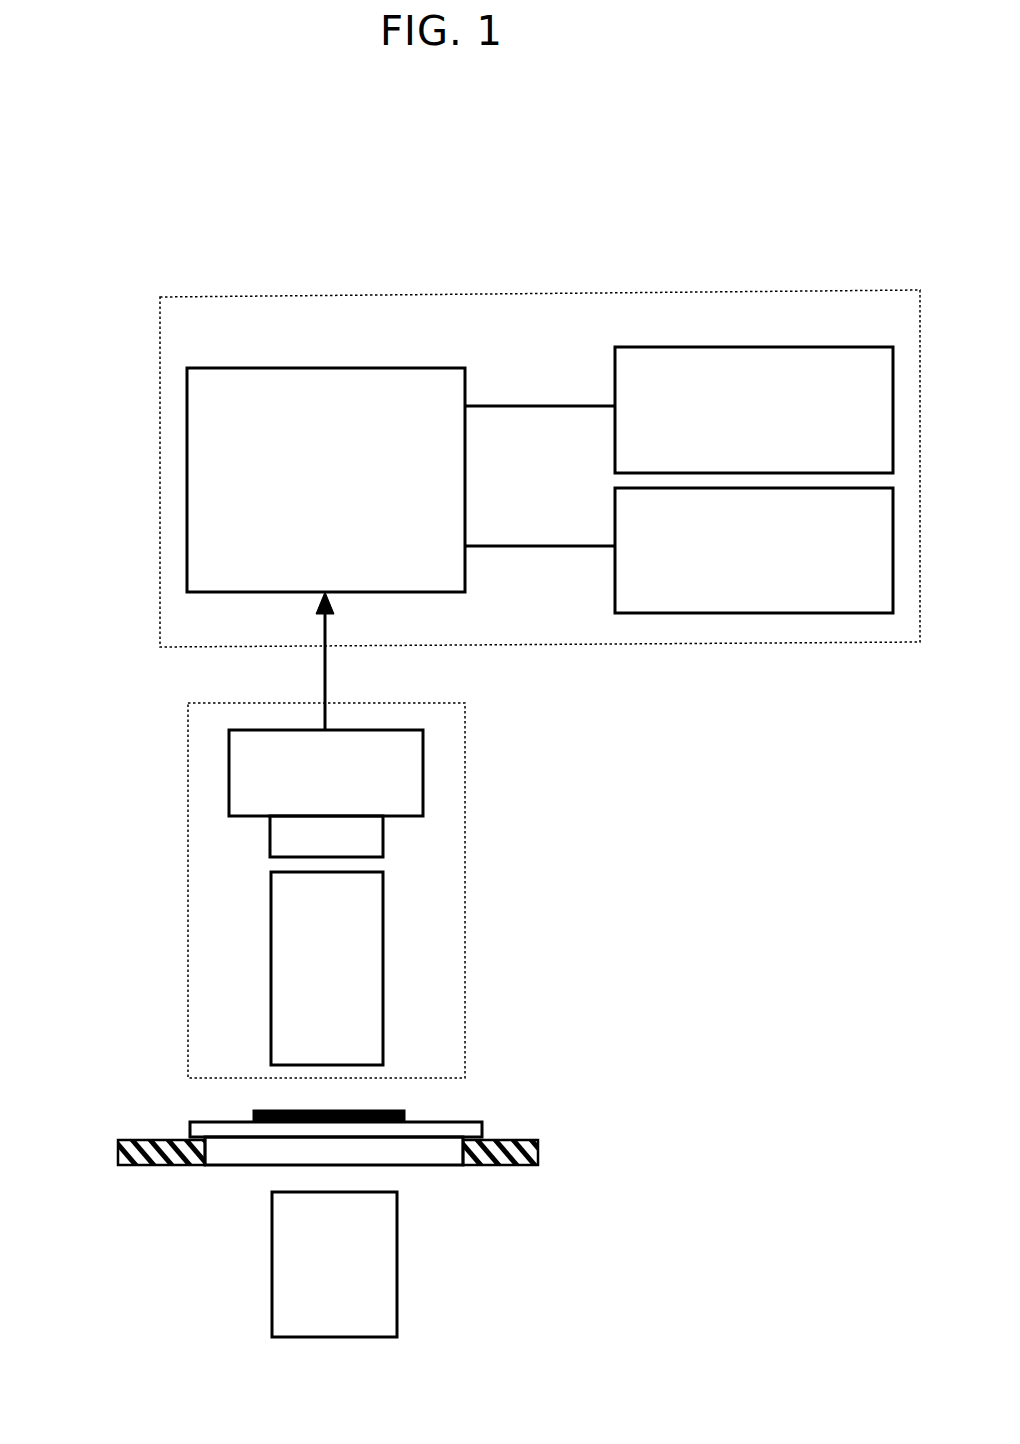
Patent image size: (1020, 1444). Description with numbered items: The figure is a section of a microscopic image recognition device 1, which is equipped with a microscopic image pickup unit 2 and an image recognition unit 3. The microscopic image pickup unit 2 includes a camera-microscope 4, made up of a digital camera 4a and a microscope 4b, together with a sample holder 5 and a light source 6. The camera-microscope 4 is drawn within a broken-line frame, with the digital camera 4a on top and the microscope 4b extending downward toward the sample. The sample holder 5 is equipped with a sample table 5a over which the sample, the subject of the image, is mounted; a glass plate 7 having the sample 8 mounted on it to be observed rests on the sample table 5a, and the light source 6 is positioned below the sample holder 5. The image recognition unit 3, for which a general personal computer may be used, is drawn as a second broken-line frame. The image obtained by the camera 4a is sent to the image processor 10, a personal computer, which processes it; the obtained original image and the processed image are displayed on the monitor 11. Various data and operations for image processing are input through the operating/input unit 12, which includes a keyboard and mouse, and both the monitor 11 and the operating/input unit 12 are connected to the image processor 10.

The microscopic image recognition device 1 is at (240, 167).
The microscopic image pickup unit 2 is at (130, 787).
The image recognition unit 3 is at (537, 292).
The camera-microscope 4 is at (465, 865).
The digital camera 4a is at (398, 776).
The microscope 4b is at (360, 975).
The sample holder 5 is at (578, 1143).
The sample table 5a is at (160, 1166).
The light source 6 is at (377, 1282).
The glass plate 7 is at (465, 1123).
The sample 8 is at (255, 1117).
The image processor 10 is at (378, 368).
The monitor 11 is at (822, 347).
The operating/input unit 12 is at (822, 613).